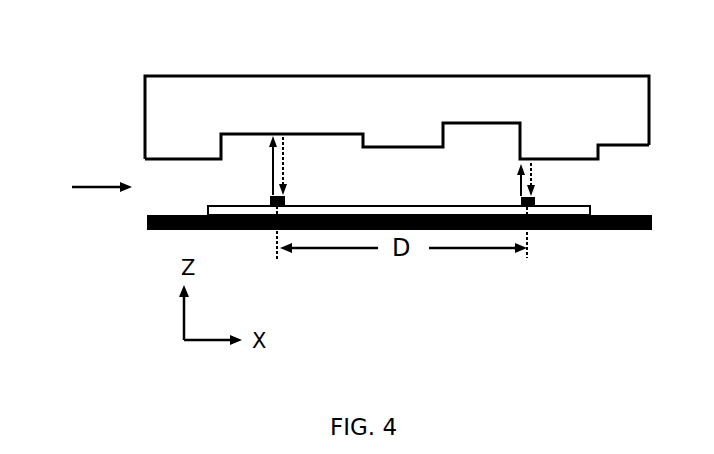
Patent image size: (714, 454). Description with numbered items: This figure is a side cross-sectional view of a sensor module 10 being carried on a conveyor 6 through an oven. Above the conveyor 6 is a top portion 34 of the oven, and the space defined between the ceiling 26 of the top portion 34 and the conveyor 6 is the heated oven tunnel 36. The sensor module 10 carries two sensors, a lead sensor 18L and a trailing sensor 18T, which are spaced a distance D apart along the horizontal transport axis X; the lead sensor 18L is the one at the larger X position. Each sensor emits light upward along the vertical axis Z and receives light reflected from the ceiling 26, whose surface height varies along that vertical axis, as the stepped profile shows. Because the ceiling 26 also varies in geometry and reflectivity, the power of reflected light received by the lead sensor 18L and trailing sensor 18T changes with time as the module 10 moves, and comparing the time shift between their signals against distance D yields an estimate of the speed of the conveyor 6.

The top portion 34 is at (165, 100).
The ceiling 26 is at (326, 134).
The conveyor 6 is at (630, 230).
The sensor module 10 is at (397, 207).
The trailing sensor 18T is at (270, 196).
The lead sensor 18L is at (527, 197).
The heated oven tunnel 36 is at (85, 189).